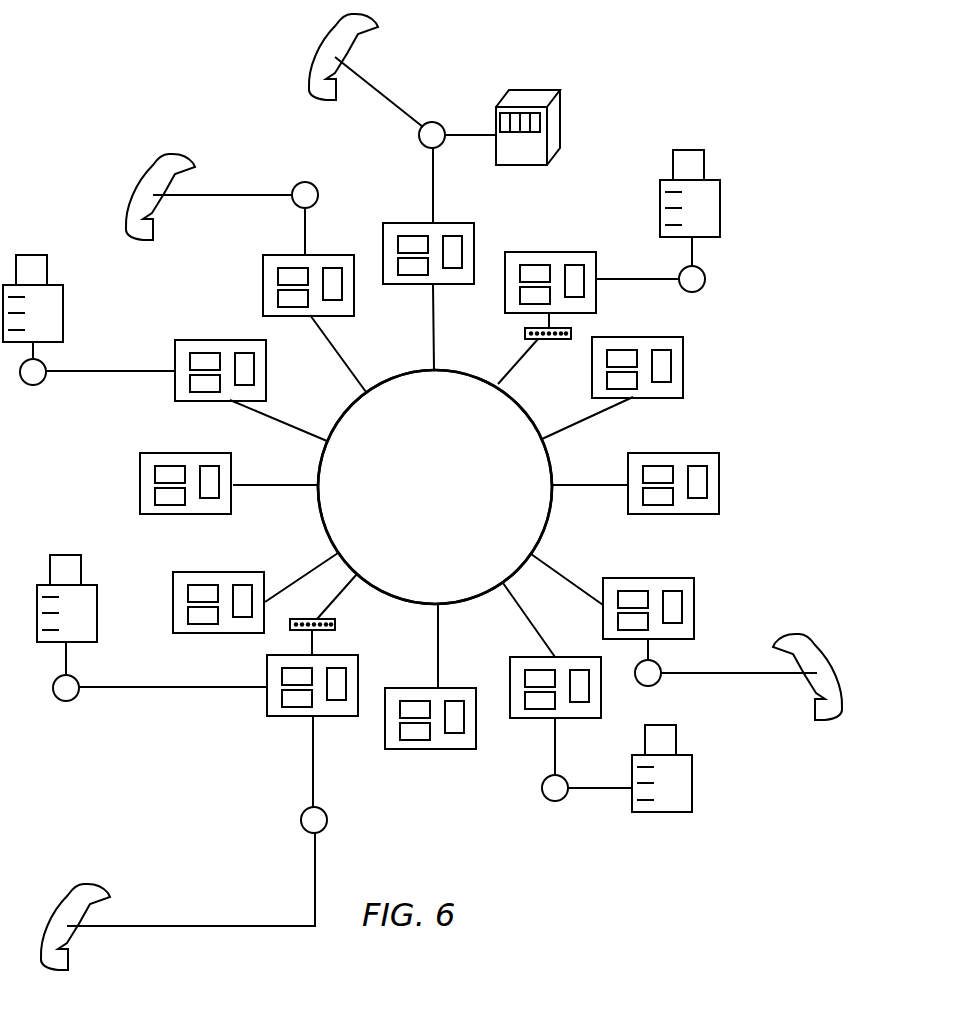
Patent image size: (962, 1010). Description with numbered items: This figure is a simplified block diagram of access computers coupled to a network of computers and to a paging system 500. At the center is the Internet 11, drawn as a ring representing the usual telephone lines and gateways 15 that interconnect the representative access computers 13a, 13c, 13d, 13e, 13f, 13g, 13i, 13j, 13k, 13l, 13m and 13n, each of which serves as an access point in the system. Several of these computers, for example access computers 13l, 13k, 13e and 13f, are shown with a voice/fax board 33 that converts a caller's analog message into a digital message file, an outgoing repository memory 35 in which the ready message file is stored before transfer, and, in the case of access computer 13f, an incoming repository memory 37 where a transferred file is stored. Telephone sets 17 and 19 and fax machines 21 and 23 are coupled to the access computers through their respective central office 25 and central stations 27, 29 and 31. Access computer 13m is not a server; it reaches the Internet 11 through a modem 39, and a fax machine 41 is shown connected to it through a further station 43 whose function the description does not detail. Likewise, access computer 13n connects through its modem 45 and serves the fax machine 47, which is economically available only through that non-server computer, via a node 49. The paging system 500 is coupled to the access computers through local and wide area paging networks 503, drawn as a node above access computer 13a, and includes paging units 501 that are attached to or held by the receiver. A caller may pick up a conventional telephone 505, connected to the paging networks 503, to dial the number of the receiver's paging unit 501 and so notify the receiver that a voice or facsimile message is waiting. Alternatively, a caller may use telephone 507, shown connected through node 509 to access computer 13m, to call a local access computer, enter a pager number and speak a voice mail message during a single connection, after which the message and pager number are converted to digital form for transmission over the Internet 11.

The Internet 11 is at (620, 441).
The access computer 13a is at (442, 223).
The access computer 13c is at (660, 337).
The access computer 13d is at (722, 483).
The access computer 13e is at (683, 578).
The access computer 13f is at (540, 718).
The access computer 13g is at (420, 749).
The access computer 13i is at (210, 633).
The access computer 13j is at (140, 480).
The access computer 13k is at (173, 392).
The access computer 13l is at (262, 280).
The access computer 13m is at (308, 717).
The access computer 13n is at (552, 252).
The telephone lines and gateways 15 is at (527, 403).
The telephone set 17 is at (138, 193).
The telephone set 19 is at (800, 632).
The fax machine 21 is at (63, 297).
The fax machine 23 is at (692, 770).
The central office 25 is at (316, 186).
The central station 27 is at (655, 683).
The central station 29 is at (38, 384).
The central station 31 is at (544, 800).
The voice/fax board 33 is at (288, 268).
The outgoing repository memory 35 is at (289, 308).
The incoming repository memory 37 is at (587, 688).
The modem 39 is at (333, 629).
The fax machine 41 is at (97, 590).
The network interface node 43 is at (72, 699).
The modem 45 is at (524, 337).
The fax machine 47 is at (720, 198).
The network interface node 49 is at (706, 272).
The paging system 500 is at (617, 135).
The paging unit 501 is at (548, 90).
The local and wide area paging networks 503 is at (437, 122).
The conventional telephone 505 is at (317, 57).
The telephone 507 is at (82, 884).
The network node 509 is at (302, 813).